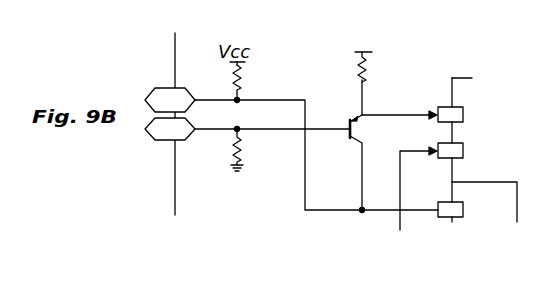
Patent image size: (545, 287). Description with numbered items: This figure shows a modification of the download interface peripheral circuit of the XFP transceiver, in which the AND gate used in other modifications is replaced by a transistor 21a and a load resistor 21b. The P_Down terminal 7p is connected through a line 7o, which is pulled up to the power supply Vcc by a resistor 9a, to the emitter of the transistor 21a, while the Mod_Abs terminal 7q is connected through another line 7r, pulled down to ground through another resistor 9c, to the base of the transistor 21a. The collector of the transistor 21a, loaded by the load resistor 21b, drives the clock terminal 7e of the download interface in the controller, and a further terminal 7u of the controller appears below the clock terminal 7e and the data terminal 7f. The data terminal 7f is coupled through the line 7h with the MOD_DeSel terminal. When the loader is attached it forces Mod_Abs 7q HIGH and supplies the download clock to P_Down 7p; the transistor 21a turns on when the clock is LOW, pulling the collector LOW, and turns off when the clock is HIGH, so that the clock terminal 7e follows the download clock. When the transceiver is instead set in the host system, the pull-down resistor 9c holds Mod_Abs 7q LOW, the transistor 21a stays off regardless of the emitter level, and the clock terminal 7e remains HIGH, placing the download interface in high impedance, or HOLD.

The P_Down terminal 7p is at (180, 86).
The Mod_Abs terminal 7q is at (180, 141).
The pull-up resistor 9a is at (242, 81).
The pull-down resistor 9c is at (242, 147).
The line 7o is at (334, 80).
The line 7r is at (327, 132).
The transistor 21a is at (355, 129).
The load resistor 21b is at (367, 72).
The clock terminal 7e is at (465, 115).
The data terminal 7f is at (465, 151).
The circuit block 7u is at (465, 210).
The line 7h is at (415, 203).